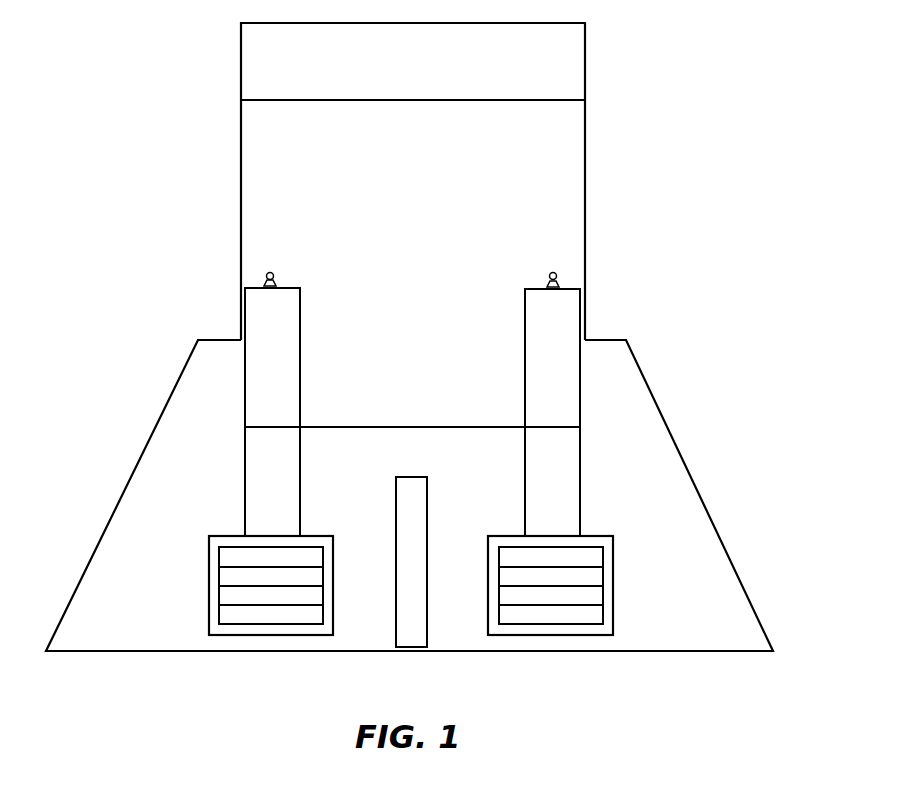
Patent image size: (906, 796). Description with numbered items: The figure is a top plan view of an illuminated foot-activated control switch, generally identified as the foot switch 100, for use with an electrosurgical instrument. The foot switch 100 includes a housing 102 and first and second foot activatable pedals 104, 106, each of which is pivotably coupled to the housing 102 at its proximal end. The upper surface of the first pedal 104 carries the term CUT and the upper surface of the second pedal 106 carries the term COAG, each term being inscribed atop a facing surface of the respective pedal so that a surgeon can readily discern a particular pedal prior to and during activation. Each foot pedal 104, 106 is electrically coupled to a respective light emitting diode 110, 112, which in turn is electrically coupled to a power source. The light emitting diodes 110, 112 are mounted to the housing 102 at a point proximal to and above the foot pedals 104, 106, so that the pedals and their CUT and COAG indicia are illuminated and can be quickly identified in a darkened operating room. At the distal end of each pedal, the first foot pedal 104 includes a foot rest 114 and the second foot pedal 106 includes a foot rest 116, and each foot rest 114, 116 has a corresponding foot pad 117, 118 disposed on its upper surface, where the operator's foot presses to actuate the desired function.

The foot switch 100 is at (145, 188).
The housing 102 is at (564, 160).
The first foot activatable pedal 104 is at (263, 480).
The second foot activatable pedal 106 is at (560, 479).
The light emitting diode 110 is at (271, 273).
The light emitting diode 112 is at (552, 273).
The foot rest 114 is at (237, 631).
The foot rest 116 is at (523, 631).
The foot pad 117 is at (285, 617).
The foot pad 118 is at (586, 617).